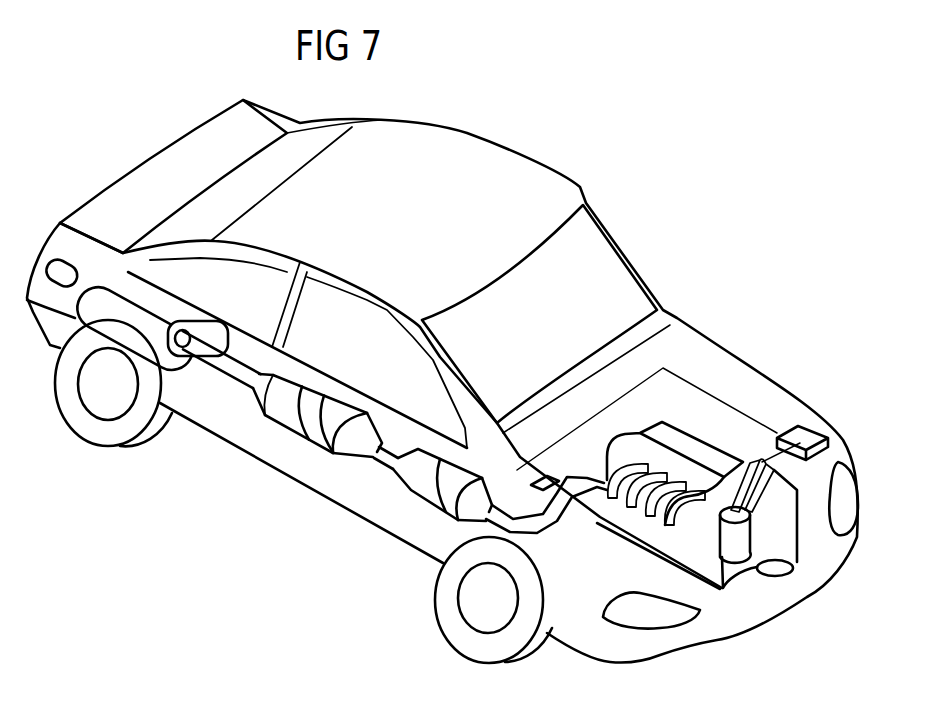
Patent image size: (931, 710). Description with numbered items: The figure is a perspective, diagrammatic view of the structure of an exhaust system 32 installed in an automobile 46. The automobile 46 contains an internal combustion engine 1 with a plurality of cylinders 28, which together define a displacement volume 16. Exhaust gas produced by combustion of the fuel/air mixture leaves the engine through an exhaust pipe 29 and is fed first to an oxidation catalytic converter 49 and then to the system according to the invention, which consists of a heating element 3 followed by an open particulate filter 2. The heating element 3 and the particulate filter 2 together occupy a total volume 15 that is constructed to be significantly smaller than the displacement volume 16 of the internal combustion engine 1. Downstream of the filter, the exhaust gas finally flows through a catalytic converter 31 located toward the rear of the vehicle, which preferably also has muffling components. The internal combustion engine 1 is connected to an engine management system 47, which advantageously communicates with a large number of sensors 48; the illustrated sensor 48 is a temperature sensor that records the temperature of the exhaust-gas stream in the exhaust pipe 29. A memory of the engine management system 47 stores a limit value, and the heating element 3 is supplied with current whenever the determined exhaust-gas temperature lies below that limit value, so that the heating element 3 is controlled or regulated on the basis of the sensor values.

The automobile 46 is at (738, 300).
The catalytic converter 31 is at (102, 274).
The open particulate filter 2 is at (305, 388).
The heating element 3 is at (340, 408).
The total volume 15 is at (268, 431).
The exhaust system 32 is at (382, 467).
The oxidation catalytic converter 49 is at (433, 500).
The exhaust pipe 29 is at (540, 518).
The sensor 48 is at (542, 478).
The internal combustion engine 1 is at (790, 508).
The cylinders 28 is at (740, 537).
The displacement volume 16 is at (738, 562).
The engine management system 47 is at (808, 430).